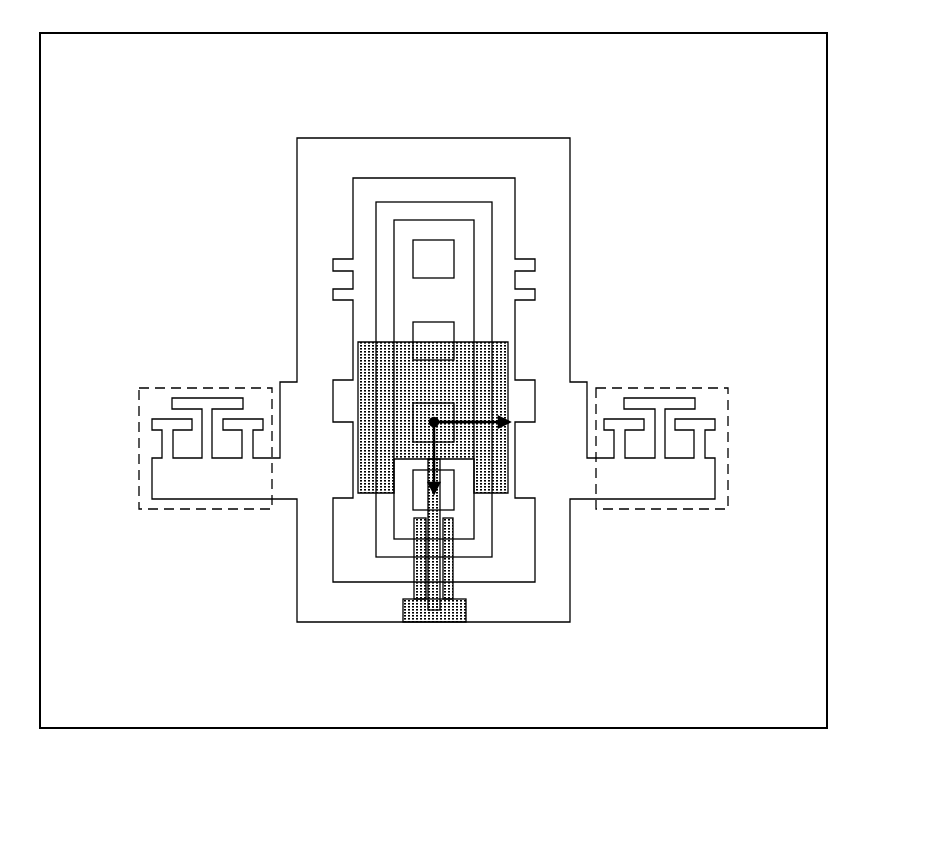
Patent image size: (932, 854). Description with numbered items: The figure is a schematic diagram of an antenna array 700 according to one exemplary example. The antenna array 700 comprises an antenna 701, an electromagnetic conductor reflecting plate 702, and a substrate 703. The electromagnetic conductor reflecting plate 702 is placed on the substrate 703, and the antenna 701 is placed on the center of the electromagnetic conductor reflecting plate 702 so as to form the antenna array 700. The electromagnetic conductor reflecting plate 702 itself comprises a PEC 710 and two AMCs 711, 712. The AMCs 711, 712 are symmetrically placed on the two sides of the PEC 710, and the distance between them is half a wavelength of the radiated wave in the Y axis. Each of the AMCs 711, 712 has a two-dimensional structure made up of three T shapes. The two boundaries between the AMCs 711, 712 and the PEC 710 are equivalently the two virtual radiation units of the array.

The antenna array 700 is at (910, 768).
The antenna 701 is at (360, 403).
The electromagnetic conductor reflecting plate 702 is at (463, 138).
The substrate 703 is at (827, 147).
The PEC 710 is at (548, 334).
The AMC 711 is at (217, 385).
The AMC 712 is at (652, 385).